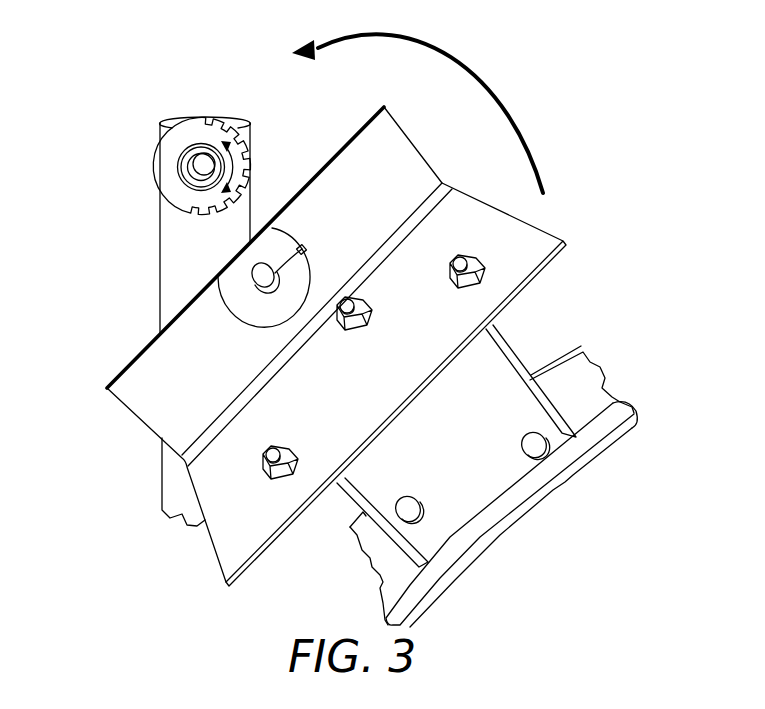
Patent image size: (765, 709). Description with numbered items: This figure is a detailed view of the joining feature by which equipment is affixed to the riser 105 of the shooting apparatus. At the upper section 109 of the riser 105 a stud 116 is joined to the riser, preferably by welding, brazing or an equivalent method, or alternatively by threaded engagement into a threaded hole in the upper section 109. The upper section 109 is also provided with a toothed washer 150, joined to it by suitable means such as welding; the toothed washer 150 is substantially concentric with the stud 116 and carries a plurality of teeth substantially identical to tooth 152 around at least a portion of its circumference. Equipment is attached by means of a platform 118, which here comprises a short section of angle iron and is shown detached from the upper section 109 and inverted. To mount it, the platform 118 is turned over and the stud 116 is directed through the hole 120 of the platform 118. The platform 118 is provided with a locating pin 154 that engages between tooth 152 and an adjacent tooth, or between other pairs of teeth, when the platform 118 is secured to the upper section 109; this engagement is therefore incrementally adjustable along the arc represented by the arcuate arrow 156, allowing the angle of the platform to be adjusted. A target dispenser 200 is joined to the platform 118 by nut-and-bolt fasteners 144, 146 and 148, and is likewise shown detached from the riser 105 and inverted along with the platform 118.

The riser 105 is at (128, 319).
The upper section 109 is at (160, 253).
The stud 116 is at (198, 168).
The platform 118 is at (445, 186).
The hole 120 is at (276, 272).
The nut-and-bolt fastener 144 is at (263, 477).
The nut-and-bolt fastener 146 is at (373, 312).
The nut-and-bolt fastener 148 is at (484, 262).
The toothed washer 150 is at (153, 165).
The tooth 152 is at (214, 122).
The locating pin 154 is at (307, 248).
The arcuate arrow 156 is at (232, 157).
The target dispenser 200 is at (636, 436).